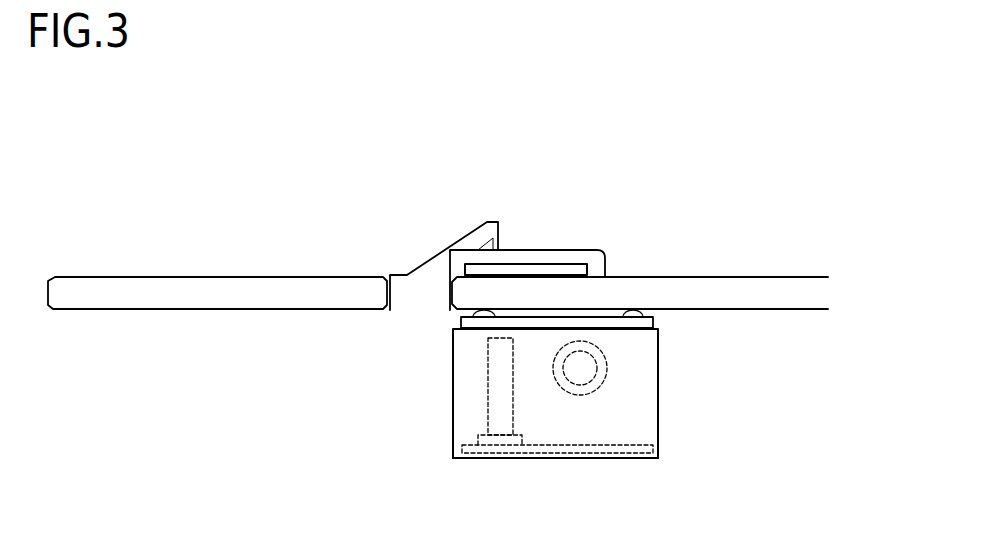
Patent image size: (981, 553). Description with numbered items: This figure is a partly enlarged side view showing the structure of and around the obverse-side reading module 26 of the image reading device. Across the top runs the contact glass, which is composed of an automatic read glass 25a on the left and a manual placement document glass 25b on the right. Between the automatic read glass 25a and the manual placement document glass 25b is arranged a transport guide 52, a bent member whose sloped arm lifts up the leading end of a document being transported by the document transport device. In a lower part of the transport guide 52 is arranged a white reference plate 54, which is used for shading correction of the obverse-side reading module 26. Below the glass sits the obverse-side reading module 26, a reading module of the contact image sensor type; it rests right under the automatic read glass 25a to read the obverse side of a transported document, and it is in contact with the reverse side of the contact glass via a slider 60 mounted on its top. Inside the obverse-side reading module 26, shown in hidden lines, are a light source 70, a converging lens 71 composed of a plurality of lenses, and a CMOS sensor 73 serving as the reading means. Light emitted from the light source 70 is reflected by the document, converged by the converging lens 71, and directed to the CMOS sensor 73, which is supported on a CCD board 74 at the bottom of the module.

The automatic read glass 25a is at (85, 287).
The manual placement document glass 25b is at (772, 283).
The transport guide 52 is at (430, 252).
The white reference plate 54 is at (527, 263).
The slider 60 is at (655, 322).
The obverse-side reading module 26 is at (684, 441).
The light source 70 is at (607, 365).
The converging lens 71 is at (487, 378).
The CMOS sensor 73 is at (478, 437).
The CCD board 74 is at (552, 455).